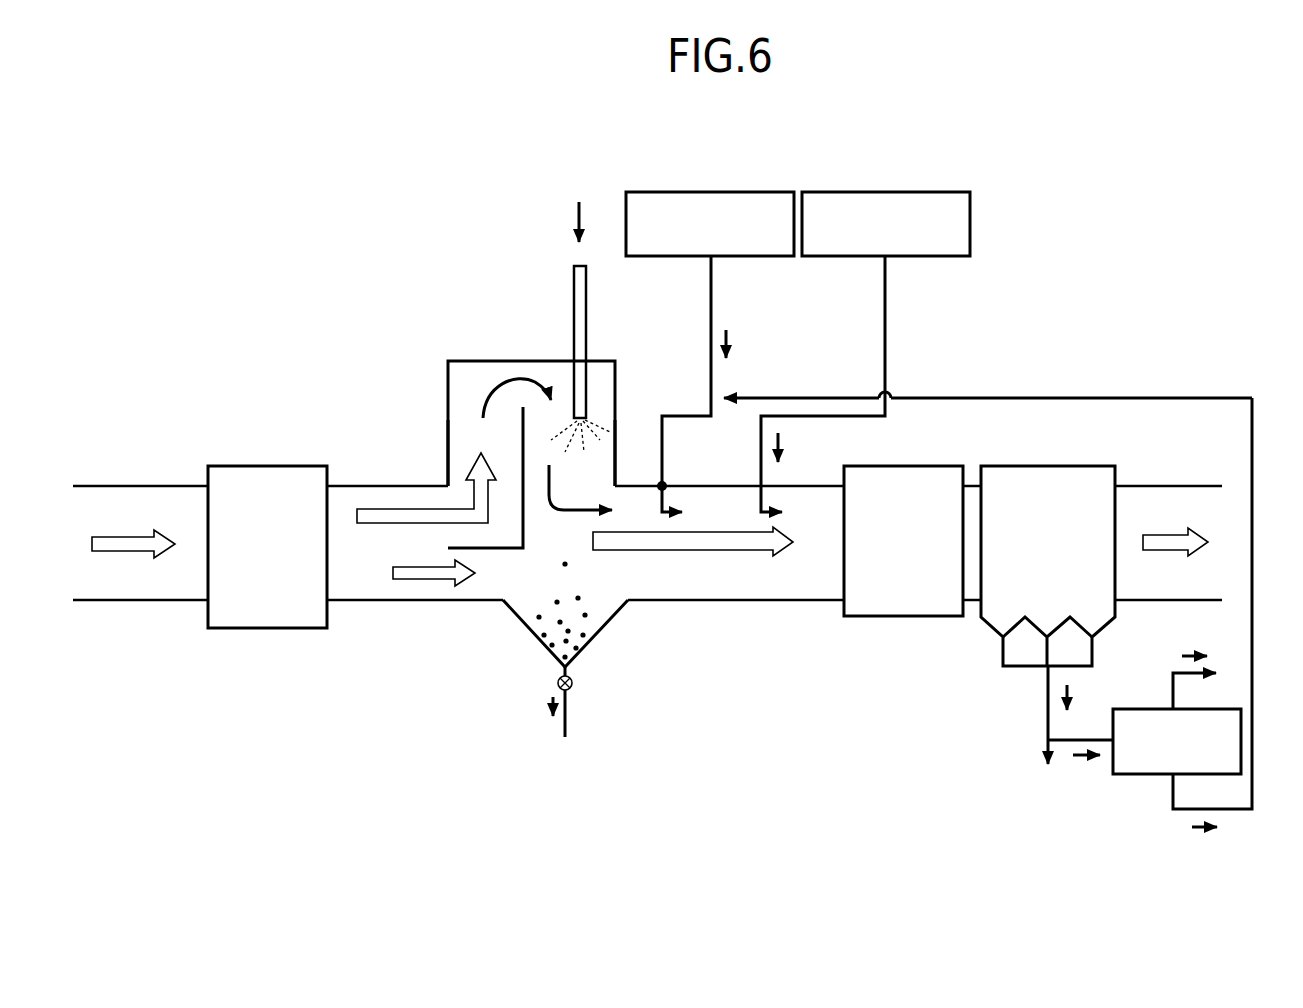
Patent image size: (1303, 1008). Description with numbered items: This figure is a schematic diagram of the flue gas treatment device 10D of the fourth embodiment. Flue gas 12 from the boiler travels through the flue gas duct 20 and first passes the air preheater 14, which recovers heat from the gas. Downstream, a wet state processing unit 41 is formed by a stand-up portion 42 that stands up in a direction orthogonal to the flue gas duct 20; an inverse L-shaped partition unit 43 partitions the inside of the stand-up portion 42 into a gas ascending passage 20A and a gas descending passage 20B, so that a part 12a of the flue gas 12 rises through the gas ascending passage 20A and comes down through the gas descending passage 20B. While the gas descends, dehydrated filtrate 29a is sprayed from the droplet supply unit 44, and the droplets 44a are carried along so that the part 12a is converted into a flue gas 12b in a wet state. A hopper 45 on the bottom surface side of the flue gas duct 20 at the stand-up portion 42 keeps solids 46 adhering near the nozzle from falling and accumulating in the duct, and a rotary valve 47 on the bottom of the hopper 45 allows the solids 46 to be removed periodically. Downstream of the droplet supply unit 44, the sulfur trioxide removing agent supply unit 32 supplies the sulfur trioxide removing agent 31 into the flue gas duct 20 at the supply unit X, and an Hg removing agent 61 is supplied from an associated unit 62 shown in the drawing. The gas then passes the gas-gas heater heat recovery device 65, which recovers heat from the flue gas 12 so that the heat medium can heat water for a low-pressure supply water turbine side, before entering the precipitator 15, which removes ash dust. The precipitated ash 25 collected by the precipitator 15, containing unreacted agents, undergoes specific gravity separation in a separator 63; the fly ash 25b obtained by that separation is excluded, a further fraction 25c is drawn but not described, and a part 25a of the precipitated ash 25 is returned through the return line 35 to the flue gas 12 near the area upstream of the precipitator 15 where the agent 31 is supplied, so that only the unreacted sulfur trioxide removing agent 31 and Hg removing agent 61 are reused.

The flue gas treatment device 10D is at (212, 274).
The flue gas 12 is at (123, 550).
The part of the flue gas 12a is at (505, 380).
The flue gas in wet state 12b is at (578, 513).
The air preheater 14 is at (235, 466).
The precipitator 15 is at (1090, 455).
The flue gas duct 20 is at (380, 600).
The gas ascending passage 20A is at (467, 428).
The gas descending passage 20B is at (554, 425).
The precipitated ash 25 is at (1072, 695).
The part of precipitated ash 25a is at (1085, 758).
The fly ash 25b is at (1190, 654).
The separated heavy fraction 25c is at (1205, 832).
The dehydrated filtrate 29a is at (576, 228).
The SO3 removing agent 31 is at (732, 347).
The SO3 removing agent supply unit 32 is at (765, 192).
The return line 35 is at (1150, 398).
The wet state processing unit 41 is at (413, 247).
The stand-up portion 42 is at (446, 383).
The partition unit 43 is at (523, 450).
The droplet supply unit 44 is at (615, 372).
The droplets 44a is at (598, 418).
The hopper 45 is at (518, 617).
The solids 46 is at (542, 645).
The rotary valve 47 is at (575, 686).
The Hg removing agent 61 is at (783, 450).
The Hg removing agent supply unit 62 is at (933, 191).
The specific gravity separator 63 is at (1205, 690).
The gas-gas heater heat recovery device 65 is at (905, 616).
The supply unit X is at (668, 484).